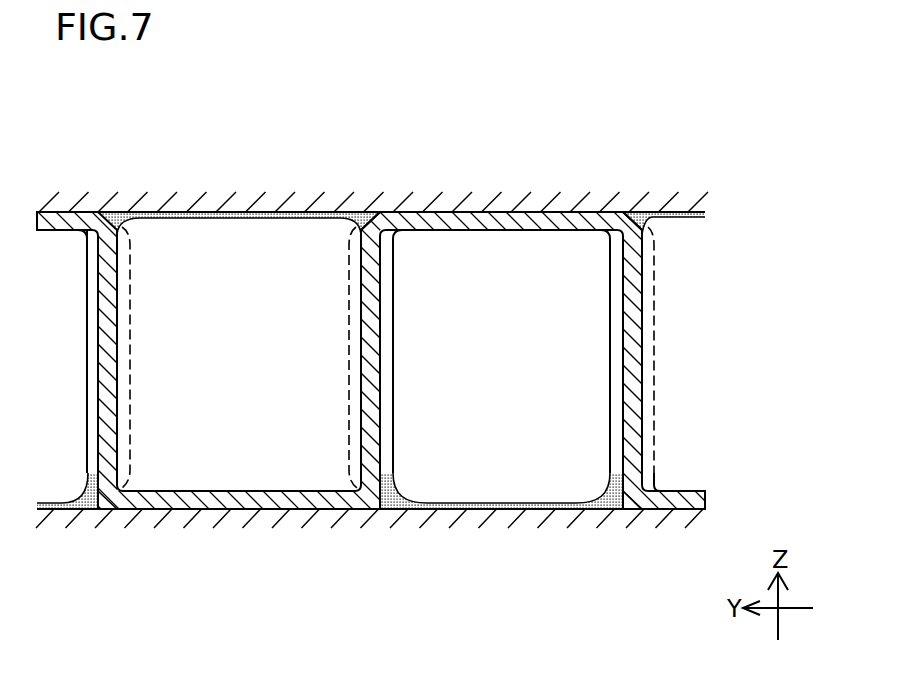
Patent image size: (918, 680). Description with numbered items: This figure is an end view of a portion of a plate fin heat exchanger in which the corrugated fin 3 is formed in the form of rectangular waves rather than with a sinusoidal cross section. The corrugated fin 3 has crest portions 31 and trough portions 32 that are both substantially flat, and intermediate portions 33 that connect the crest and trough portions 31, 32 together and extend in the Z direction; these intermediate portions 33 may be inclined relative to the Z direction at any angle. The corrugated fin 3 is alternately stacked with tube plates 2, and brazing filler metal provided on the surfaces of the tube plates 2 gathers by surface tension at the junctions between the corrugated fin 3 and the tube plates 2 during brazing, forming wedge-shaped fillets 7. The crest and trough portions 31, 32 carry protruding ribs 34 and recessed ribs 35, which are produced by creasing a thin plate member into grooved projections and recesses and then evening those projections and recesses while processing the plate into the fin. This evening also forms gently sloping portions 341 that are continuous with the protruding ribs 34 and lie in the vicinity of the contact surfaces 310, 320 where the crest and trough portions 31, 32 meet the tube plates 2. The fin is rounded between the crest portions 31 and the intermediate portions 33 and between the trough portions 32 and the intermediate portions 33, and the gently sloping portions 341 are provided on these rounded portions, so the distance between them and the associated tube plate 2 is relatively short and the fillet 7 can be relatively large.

The tube plate 2 is at (679, 201).
The corrugated fin 3 is at (697, 345).
The fillet 7 is at (356, 228).
The crest portion 31 is at (503, 213).
The trough portion 32 is at (237, 503).
The intermediate portion 33 is at (363, 390).
The protruding rib 34 is at (393, 417).
The recessed rib 35 is at (131, 339).
The contact surface 310 is at (592, 213).
The contact surface 320 is at (343, 511).
The gently sloping portion 341 is at (386, 510).